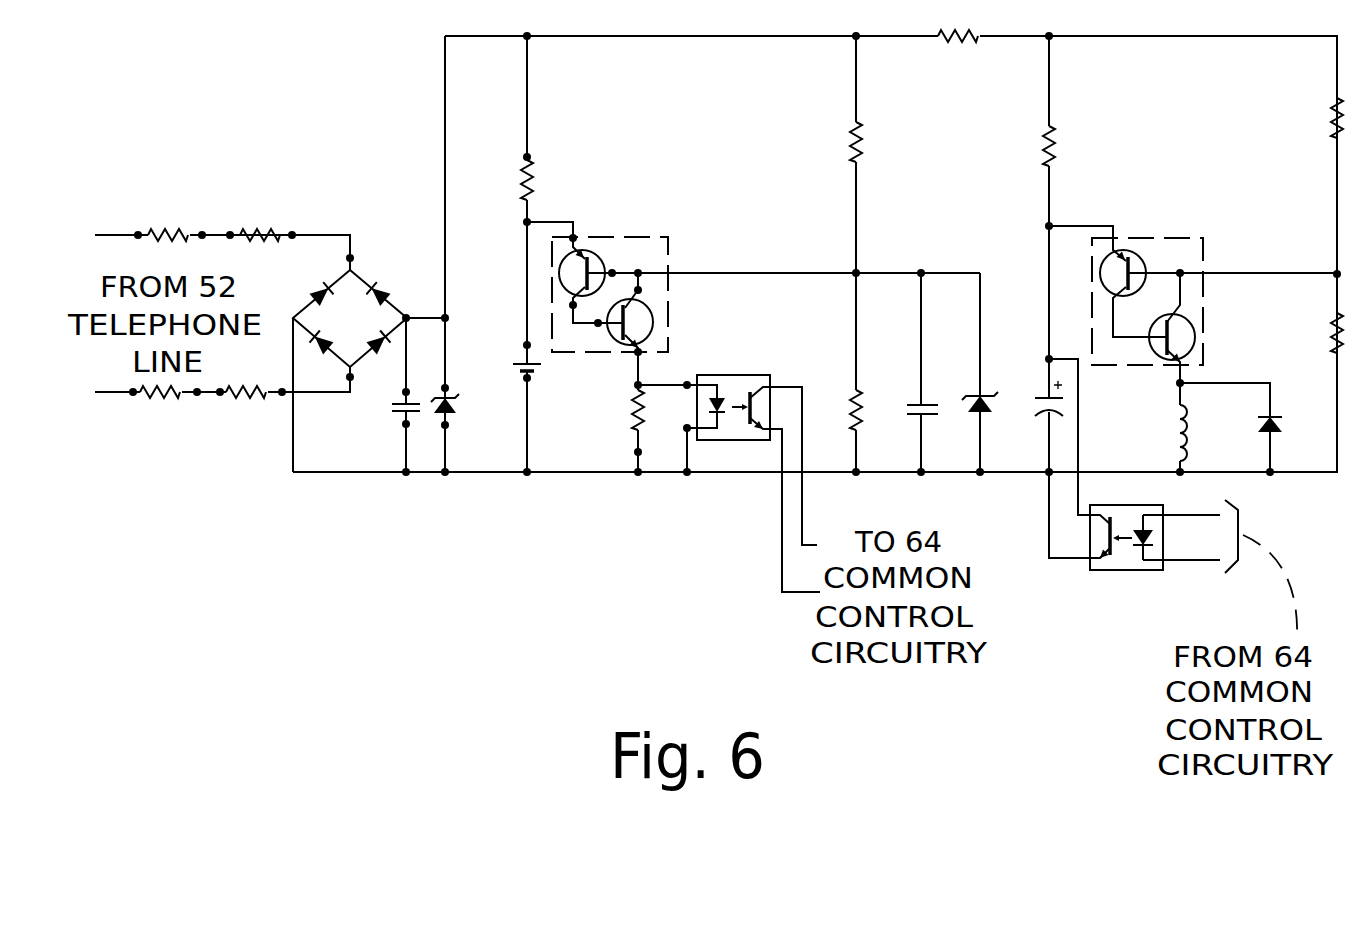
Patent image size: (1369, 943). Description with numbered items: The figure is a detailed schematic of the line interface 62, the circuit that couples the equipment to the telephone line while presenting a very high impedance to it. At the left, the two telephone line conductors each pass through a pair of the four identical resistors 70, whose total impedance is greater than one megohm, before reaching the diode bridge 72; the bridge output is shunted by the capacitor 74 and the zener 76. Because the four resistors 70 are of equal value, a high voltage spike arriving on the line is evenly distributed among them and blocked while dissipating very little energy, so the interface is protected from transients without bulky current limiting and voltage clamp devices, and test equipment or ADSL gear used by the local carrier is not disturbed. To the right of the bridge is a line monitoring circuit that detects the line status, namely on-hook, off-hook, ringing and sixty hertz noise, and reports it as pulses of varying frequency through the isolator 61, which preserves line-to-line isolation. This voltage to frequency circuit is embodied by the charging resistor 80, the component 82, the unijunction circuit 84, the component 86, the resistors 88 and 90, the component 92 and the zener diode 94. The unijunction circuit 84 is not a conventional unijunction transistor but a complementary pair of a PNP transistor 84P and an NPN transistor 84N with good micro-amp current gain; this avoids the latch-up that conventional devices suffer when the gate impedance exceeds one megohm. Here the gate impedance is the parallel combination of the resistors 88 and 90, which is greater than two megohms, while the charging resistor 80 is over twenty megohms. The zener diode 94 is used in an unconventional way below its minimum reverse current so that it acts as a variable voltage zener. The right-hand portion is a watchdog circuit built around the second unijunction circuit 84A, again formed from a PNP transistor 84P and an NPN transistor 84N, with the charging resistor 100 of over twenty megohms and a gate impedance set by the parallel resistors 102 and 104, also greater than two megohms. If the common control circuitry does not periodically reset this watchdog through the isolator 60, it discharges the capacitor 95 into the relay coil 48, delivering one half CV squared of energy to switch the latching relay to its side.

The line interface 62 is at (218, 83).
The resistors 70 is at (230, 437).
The diode bridge 72 is at (377, 283).
The capacitor 74 is at (392, 407).
The zener 76 is at (458, 402).
The charging resistor 80 is at (525, 182).
The component of voltage to frequency circuit 82 is at (515, 364).
The unijunction circuit 84 is at (669, 253).
The PNP transistor 84P is at (603, 252).
The NPN transistor 84N is at (653, 336).
The unijunction circuit 84A is at (1205, 258).
The component of voltage to frequency circuit 86 is at (635, 410).
The isolator 61 is at (730, 442).
The resistor 88 is at (852, 158).
The resistor 90 is at (853, 395).
The component of voltage to frequency circuit 92 is at (908, 405).
The zener diode 94 is at (965, 402).
The capacitor 95 is at (1035, 405).
The charging resistor 100 is at (1045, 150).
The resistor 102 is at (1332, 105).
The resistor 104 is at (1333, 352).
The relay coil 48 is at (1175, 440).
The isolator 60 is at (1100, 572).